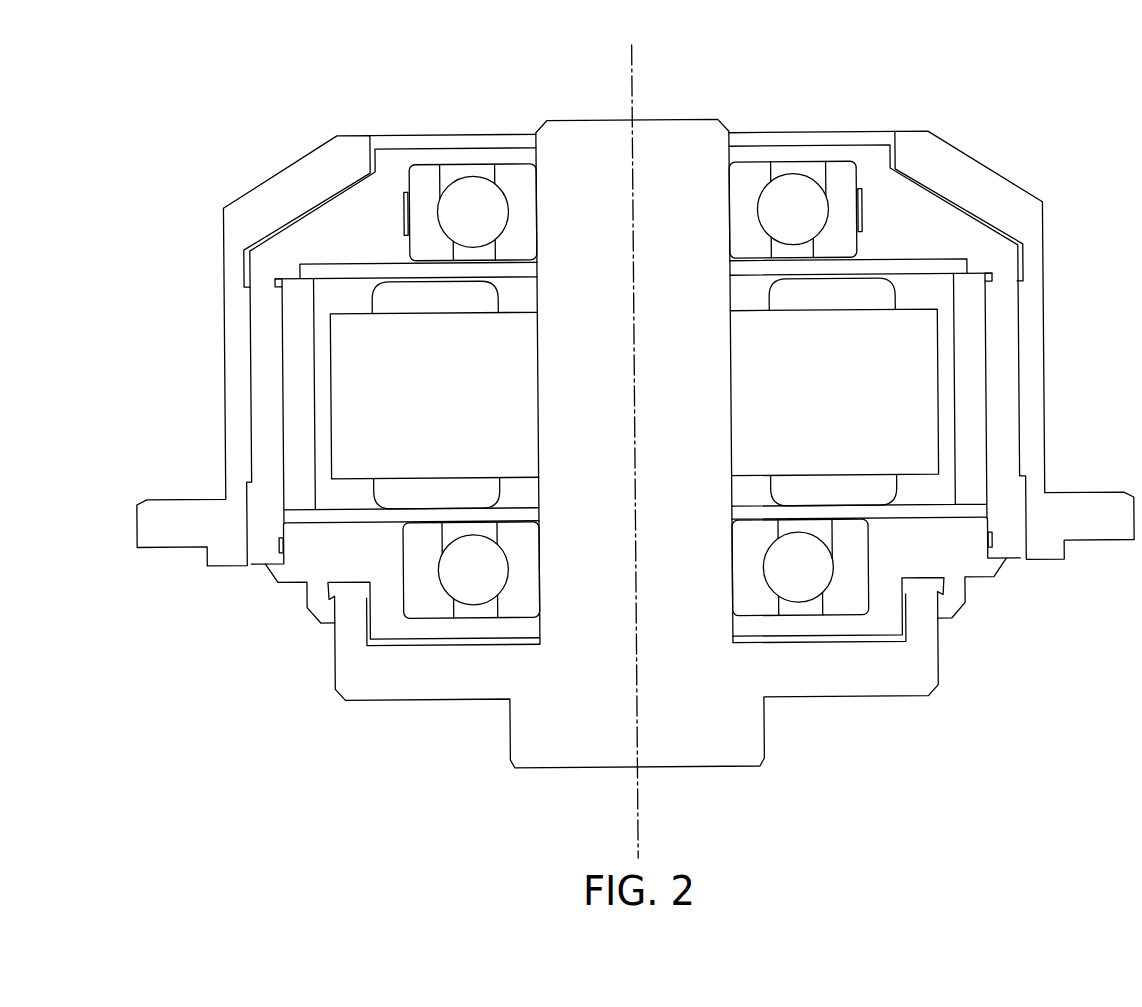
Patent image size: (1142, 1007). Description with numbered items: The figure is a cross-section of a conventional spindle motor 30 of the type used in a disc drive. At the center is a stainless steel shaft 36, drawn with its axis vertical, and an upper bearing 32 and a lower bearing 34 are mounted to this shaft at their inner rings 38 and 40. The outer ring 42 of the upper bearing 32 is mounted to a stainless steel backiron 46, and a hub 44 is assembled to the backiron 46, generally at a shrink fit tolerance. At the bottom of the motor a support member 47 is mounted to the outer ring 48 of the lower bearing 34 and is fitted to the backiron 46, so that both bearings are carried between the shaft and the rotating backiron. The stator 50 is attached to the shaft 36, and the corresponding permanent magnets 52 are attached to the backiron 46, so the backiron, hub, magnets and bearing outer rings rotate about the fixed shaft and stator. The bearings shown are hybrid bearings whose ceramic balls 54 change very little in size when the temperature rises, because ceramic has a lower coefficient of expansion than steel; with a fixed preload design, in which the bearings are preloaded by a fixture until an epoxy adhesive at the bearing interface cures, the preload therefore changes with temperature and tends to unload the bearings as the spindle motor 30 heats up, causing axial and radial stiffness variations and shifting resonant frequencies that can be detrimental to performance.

The spindle motor 30 is at (1042, 134).
The upper bearing 32 is at (790, 163).
The lower bearing 34 is at (781, 618).
The stainless steel shaft 36 is at (692, 352).
The inner ring 38 is at (525, 202).
The inner ring 40 is at (526, 577).
The outer ring 42 is at (423, 235).
The hub 44 is at (1031, 343).
The backiron 46 is at (998, 428).
The support member 47 is at (952, 563).
The outer ring 48 is at (419, 553).
The stator 50 is at (460, 406).
The permanent magnets 52 is at (298, 379).
The ceramic balls 54 is at (784, 564).